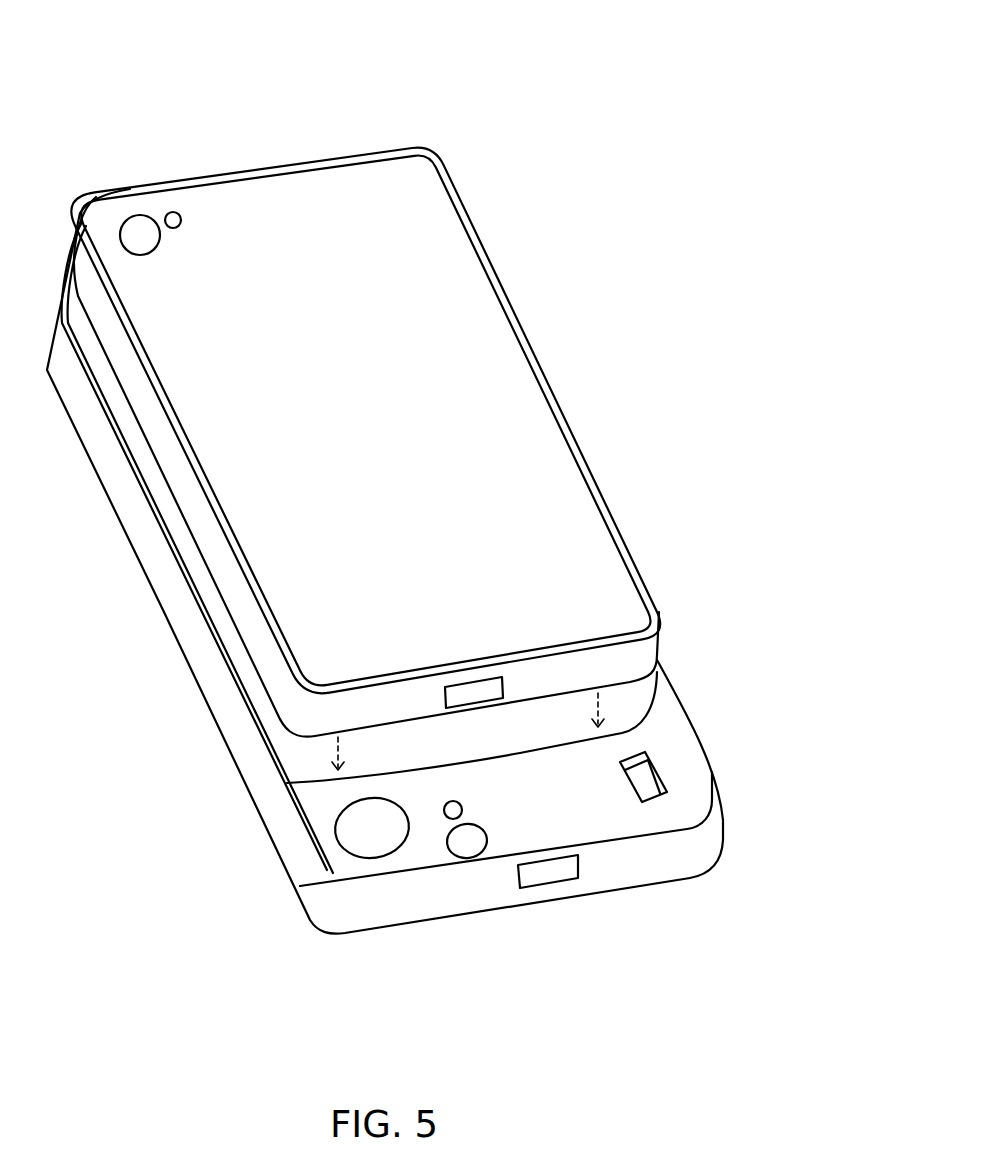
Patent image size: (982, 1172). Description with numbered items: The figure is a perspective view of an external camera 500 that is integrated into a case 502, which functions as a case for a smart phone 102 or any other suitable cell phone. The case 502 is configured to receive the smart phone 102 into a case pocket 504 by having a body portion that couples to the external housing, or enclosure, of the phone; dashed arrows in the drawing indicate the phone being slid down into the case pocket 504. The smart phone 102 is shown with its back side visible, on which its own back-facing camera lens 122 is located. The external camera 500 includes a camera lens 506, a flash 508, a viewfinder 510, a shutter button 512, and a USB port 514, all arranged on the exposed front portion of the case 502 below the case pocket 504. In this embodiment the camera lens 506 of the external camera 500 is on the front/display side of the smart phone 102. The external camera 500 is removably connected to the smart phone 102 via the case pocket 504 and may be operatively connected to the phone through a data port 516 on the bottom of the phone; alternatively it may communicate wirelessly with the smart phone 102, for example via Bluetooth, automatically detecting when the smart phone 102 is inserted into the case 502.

The smart phone 102 is at (365, 382).
The back-facing camera lens 122 is at (143, 213).
The external camera 500 is at (451, 545).
The case 502 is at (451, 614).
The case pocket 504 is at (310, 763).
The camera lens 506 is at (483, 857).
The flash 508 is at (460, 803).
The viewfinder 510 is at (662, 792).
The shutter button 512 is at (352, 858).
The USB port 514 is at (578, 882).
The data port 516 is at (509, 649).